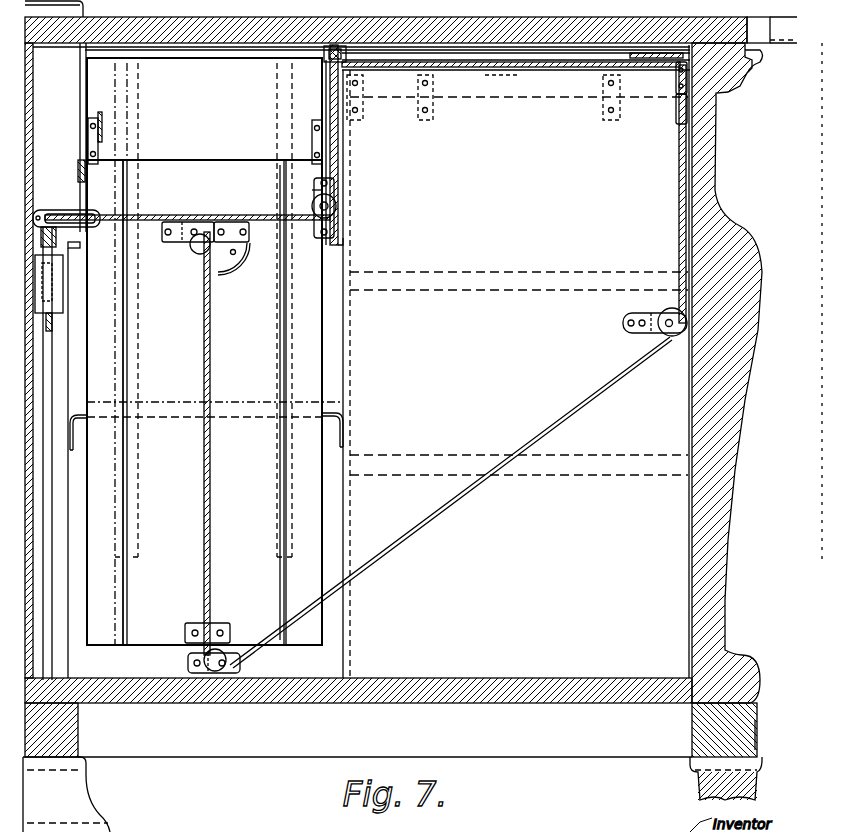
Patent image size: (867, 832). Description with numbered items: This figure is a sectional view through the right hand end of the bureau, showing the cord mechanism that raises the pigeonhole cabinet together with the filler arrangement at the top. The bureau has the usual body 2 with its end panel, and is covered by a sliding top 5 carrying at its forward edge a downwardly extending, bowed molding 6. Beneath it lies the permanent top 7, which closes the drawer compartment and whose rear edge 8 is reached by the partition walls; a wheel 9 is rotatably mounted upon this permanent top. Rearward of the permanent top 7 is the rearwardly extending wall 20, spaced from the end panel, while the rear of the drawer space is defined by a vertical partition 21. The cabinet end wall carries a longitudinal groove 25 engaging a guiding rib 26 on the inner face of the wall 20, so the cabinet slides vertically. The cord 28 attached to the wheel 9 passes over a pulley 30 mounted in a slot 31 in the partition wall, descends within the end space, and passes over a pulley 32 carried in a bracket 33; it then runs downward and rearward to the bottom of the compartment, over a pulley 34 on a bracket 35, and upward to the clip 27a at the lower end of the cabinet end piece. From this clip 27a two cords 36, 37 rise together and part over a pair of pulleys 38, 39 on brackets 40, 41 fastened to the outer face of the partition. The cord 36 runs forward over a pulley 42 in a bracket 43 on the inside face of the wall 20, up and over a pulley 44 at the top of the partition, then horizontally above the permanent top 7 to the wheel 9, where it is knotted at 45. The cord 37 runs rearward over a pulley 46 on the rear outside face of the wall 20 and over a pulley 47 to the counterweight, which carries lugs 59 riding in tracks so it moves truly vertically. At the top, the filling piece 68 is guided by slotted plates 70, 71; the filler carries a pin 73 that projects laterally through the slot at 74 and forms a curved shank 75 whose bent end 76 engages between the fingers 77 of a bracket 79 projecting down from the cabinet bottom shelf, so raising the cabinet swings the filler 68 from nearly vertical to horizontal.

The body 2 is at (422, 416).
The sliding top 5 is at (520, 47).
The molding 6 is at (753, 64).
The permanent top 7 is at (578, 58).
The rear of the permanent top 8 is at (350, 100).
The wheel 9 is at (548, 67).
The rearwardly extending wall 20 is at (266, 381).
The vertical partition 21 is at (350, 258).
The longitudinal groove 25 is at (127, 381).
The guiding rib 26 is at (287, 355).
The clip 27a is at (232, 624).
The cord 28 is at (680, 208).
The pulley 30 is at (677, 80).
The slot 31 is at (677, 118).
The pulley 32 is at (673, 338).
The bracket 33 is at (624, 328).
The pulley 34 is at (228, 654).
The bracket 35 is at (196, 674).
The cord 36 is at (339, 146).
The cord 37 is at (160, 215).
The pulley 38 is at (218, 221).
The pulley 39 is at (198, 250).
The bracket 40 is at (170, 242).
The bracket 41 is at (236, 258).
The pulley 42 is at (313, 190).
The bracket 43 is at (335, 180).
The pulley 44 is at (347, 60).
The knot 45 is at (62, 300).
The pulley 46 is at (60, 210).
The pulley 47 is at (57, 242).
The lug 59 is at (53, 320).
The filling piece 68 is at (204, 351).
The slotted plate 70 is at (80, 106).
The slotted plate 71 is at (326, 100).
The plate 73 is at (100, 140).
The laterally projecting portion 74 is at (87, 150).
The shank 75 is at (78, 172).
The bent end 76 is at (80, 245).
The finger 77 is at (519, 286).
The bracket 79 is at (80, 428).